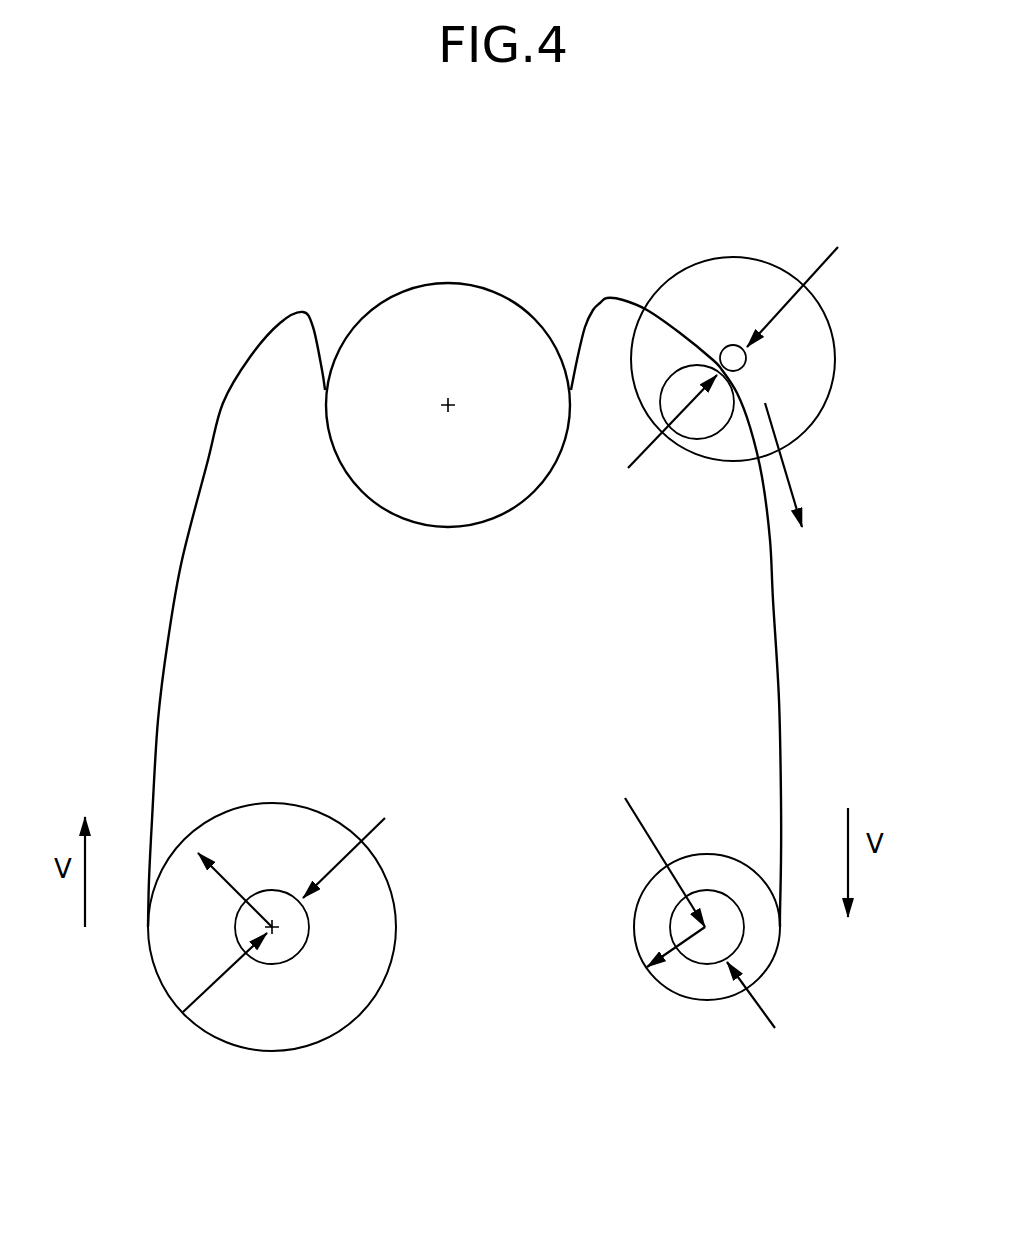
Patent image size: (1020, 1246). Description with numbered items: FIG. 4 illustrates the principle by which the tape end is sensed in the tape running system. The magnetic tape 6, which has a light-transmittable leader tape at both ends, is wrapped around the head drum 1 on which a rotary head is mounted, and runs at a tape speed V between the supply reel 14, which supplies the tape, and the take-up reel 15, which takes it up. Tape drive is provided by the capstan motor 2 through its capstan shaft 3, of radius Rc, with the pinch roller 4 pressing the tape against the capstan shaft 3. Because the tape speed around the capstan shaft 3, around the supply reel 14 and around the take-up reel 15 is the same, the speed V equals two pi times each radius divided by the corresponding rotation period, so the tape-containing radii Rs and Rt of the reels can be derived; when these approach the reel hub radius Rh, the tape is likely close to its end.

The head drum 1 is at (465, 285).
The capstan motor 2 is at (745, 257).
The capstan shaft 3 is at (747, 362).
The pinch roller 4 is at (690, 440).
The magnetic tape 6 is at (303, 312).
The supply reel 14 is at (362, 1010).
The take-up reel 15 is at (670, 995).